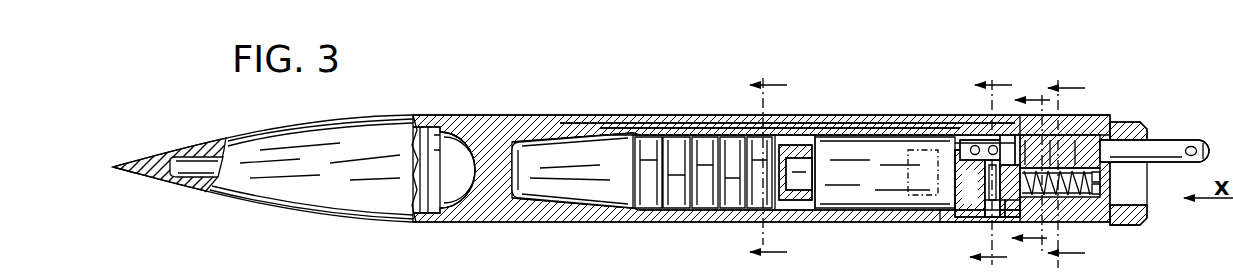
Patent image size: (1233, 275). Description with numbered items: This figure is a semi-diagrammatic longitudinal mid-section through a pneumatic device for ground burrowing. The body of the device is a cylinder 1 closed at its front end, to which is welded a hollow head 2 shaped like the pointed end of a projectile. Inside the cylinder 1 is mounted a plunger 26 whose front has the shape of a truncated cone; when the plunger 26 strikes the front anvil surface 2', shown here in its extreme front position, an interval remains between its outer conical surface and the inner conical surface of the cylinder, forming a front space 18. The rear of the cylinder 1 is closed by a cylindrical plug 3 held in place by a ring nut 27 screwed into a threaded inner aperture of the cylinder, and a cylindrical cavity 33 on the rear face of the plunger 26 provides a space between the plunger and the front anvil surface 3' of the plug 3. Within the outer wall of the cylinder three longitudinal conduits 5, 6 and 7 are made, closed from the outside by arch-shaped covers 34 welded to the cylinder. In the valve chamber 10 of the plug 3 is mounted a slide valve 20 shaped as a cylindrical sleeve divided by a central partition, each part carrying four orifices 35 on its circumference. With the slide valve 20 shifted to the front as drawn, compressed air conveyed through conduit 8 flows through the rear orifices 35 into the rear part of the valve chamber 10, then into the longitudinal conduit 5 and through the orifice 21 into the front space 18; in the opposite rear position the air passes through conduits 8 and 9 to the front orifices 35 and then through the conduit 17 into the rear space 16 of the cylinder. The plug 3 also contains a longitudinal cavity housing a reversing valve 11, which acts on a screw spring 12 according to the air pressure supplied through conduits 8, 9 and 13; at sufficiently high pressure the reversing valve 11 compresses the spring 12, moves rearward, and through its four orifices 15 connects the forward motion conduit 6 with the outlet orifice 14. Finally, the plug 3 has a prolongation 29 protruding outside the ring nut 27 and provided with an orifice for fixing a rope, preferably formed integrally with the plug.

The cylinder 1 is at (516, 116).
The hollow head 2 is at (263, 162).
The front anvil surface 2' is at (475, 170).
The cylindrical plug 3 is at (1065, 111).
The anvil surface of the plug 3' is at (968, 227).
The longitudinal conduit 5 is at (797, 124).
The longitudinal forward motion conduit 6 is at (768, 169).
The longitudinal conduit 7 is at (991, 169).
The conduit 8 is at (1017, 173).
The conduit 9 is at (1020, 170).
The valve chamber 10 is at (999, 139).
The reversing valve 11 is at (1015, 220).
The screw spring 12 is at (1099, 193).
The conduit 13 is at (986, 220).
The outlet orifice 14 is at (1099, 180).
The orifices of the reversing valve 15 is at (1066, 136).
The rear space 16 is at (884, 192).
The conduit 17 is at (950, 152).
The front space 18 is at (549, 139).
The slide valve 20 is at (990, 134).
The orifice 21 is at (627, 127).
The plunger 26 is at (705, 150).
The ring nut 27 is at (1127, 122).
The prolongation 29 is at (1172, 144).
The cylindrical cavity 33 is at (804, 181).
The arch-shaped covers 34 is at (681, 124).
The orifices 35 is at (964, 134).